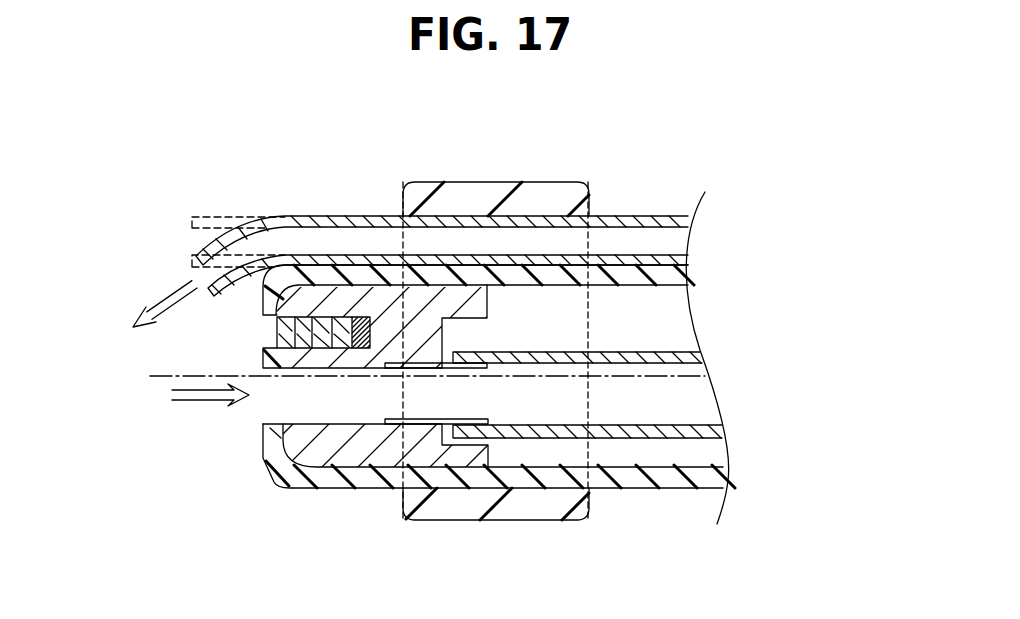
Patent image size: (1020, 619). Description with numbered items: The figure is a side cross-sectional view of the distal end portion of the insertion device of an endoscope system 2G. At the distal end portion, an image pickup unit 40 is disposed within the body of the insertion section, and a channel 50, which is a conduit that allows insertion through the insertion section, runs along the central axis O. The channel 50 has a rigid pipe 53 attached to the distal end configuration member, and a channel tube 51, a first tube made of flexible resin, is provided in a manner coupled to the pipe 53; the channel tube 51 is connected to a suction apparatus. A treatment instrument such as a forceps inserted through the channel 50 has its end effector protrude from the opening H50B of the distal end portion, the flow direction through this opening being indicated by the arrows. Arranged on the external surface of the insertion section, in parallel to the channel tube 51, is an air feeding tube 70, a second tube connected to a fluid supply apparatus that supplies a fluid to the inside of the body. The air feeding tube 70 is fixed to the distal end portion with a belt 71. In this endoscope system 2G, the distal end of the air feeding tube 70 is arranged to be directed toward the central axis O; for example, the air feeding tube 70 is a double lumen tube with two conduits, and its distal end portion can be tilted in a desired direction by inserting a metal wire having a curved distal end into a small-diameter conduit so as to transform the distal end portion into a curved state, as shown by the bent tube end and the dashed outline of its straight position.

The endoscope system 2G is at (146, 162).
The central axis O is at (414, 377).
The air feeding tube 70 is at (330, 216).
The belt 71 is at (552, 182).
The channel 50 is at (617, 553).
The pipe 53 is at (438, 427).
The channel tube 51 is at (630, 440).
The image pickup unit 40 is at (322, 348).
The opening H50B is at (260, 408).